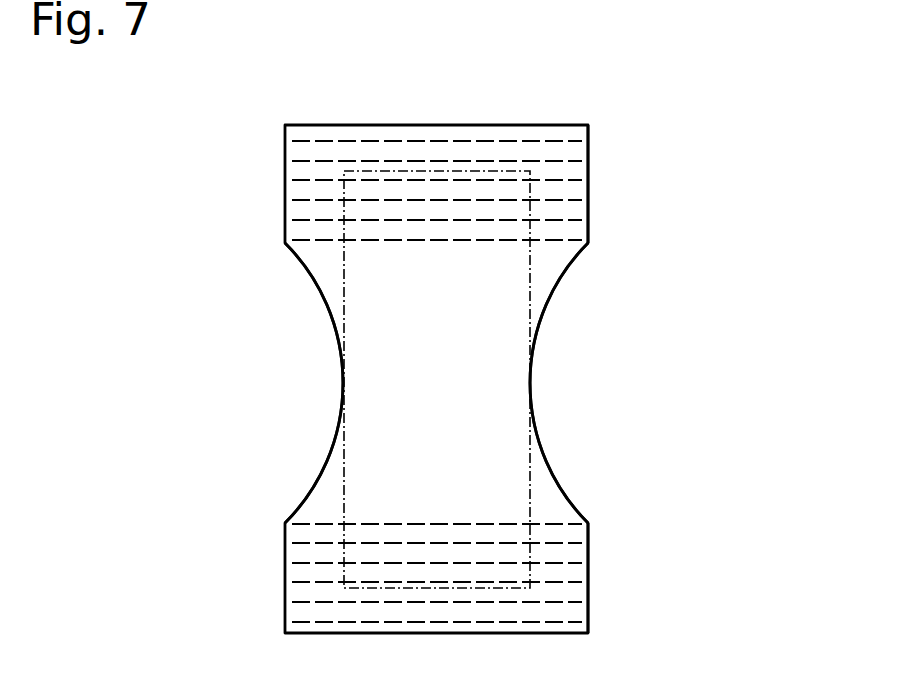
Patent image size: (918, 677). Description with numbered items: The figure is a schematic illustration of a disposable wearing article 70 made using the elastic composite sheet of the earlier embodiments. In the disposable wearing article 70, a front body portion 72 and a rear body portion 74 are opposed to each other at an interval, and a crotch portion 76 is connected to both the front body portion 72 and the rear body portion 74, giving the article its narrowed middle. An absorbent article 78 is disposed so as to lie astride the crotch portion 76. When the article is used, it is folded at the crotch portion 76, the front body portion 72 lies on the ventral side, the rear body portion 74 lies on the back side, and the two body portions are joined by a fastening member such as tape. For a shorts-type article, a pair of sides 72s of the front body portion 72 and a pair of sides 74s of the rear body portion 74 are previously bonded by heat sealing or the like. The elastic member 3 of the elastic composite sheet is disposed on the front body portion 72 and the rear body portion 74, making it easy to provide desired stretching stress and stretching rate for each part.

The elastic member 3 is at (478, 140).
The disposable wearing article 70 is at (783, 92).
The front body portion 72 is at (231, 128).
The sides of the front body portion 72s is at (588, 180).
The rear body portion 74 is at (231, 520).
The sides of the rear body portion 74s is at (588, 576).
The crotch portion 76 is at (231, 255).
The absorbent article 78 is at (530, 440).